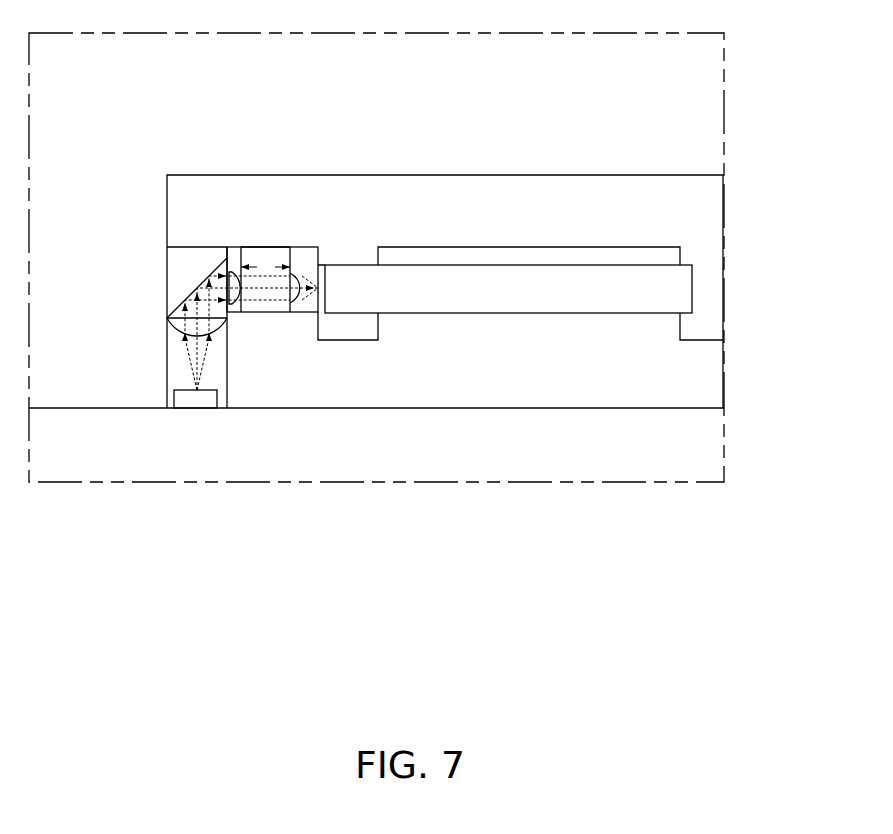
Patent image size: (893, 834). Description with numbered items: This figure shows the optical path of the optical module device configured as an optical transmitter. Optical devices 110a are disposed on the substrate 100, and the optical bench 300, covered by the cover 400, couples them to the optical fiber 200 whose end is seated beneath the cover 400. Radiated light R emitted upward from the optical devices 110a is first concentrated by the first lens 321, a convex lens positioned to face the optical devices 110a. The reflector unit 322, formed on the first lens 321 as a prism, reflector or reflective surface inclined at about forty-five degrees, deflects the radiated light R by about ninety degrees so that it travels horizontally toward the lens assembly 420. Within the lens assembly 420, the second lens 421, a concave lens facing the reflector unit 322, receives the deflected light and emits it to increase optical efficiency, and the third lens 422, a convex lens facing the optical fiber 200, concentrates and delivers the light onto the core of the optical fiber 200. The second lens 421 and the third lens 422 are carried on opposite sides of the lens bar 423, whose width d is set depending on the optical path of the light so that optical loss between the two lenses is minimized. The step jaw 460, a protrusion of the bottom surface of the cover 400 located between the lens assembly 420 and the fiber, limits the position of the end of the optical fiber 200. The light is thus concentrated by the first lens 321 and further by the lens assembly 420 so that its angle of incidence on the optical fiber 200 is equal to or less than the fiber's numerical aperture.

The substrate 100 is at (542, 463).
The optical devices 110a is at (195, 400).
The optical fibers 200 is at (690, 292).
The optical bench 300 is at (680, 390).
The first lens 321 is at (165, 322).
The reflector unit 322 is at (221, 274).
The cover 400 is at (522, 195).
The lens assembly 420 is at (286, 326).
The second lens 421 is at (230, 268).
The third lens 422 is at (292, 265).
The lens bar 423 is at (268, 247).
The step jaw 460 is at (326, 266).
The radiated light R is at (207, 362).
The width of the lens bar d is at (265, 268).